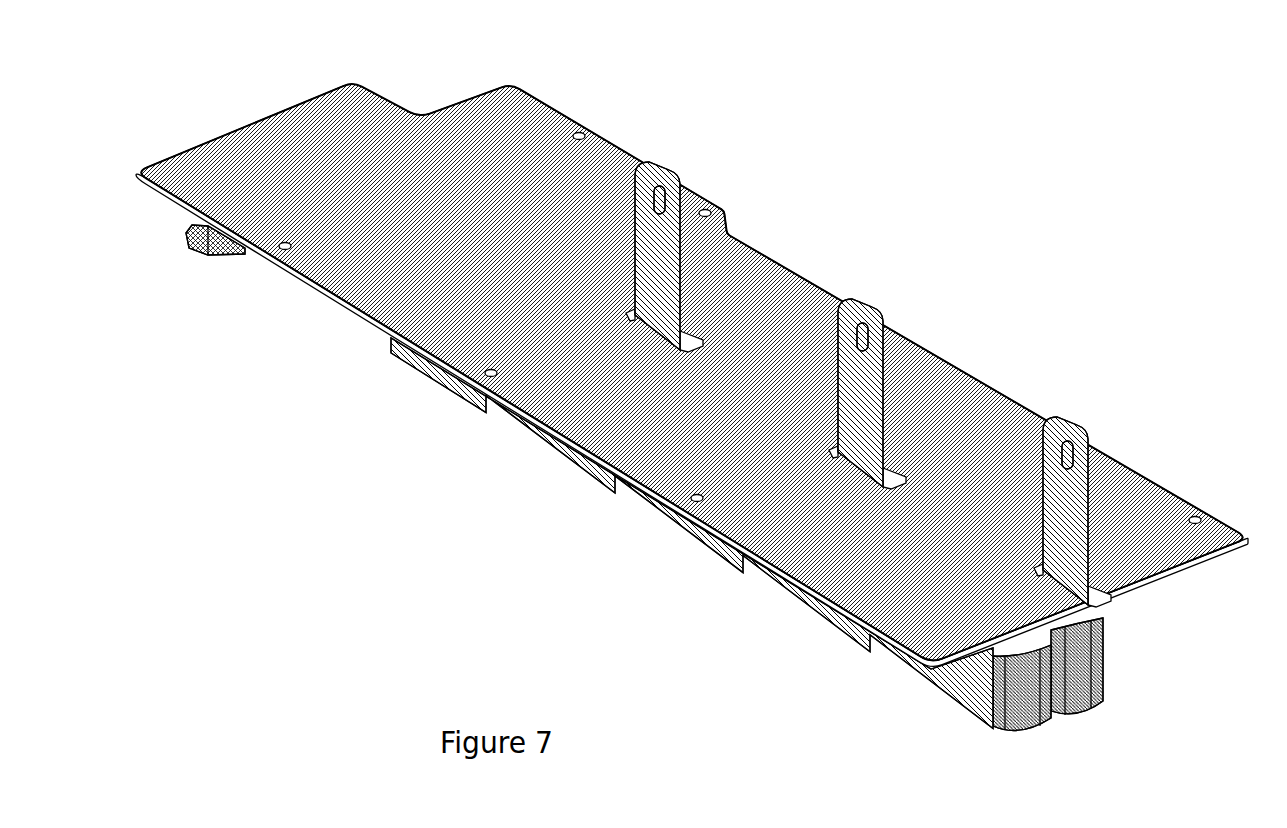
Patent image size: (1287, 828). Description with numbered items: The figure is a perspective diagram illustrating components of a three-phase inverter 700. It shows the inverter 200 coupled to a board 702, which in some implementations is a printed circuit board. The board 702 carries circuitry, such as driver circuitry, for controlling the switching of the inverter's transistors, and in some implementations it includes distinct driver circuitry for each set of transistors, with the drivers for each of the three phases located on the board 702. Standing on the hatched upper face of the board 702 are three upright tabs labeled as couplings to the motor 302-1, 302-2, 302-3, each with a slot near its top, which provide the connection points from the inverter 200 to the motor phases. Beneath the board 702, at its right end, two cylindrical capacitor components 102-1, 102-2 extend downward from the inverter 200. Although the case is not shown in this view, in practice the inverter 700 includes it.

The three-phase inverter 700 is at (1052, 76).
The inverter 200 is at (656, 571).
The board 702 is at (178, 140).
The coupling to motor 302-1 is at (1060, 420).
The coupling to motor 302-2 is at (857, 298).
The coupling to motor 302-3 is at (645, 163).
The capacitor component 102-1 is at (987, 722).
The capacitor component 102-2 is at (1133, 722).